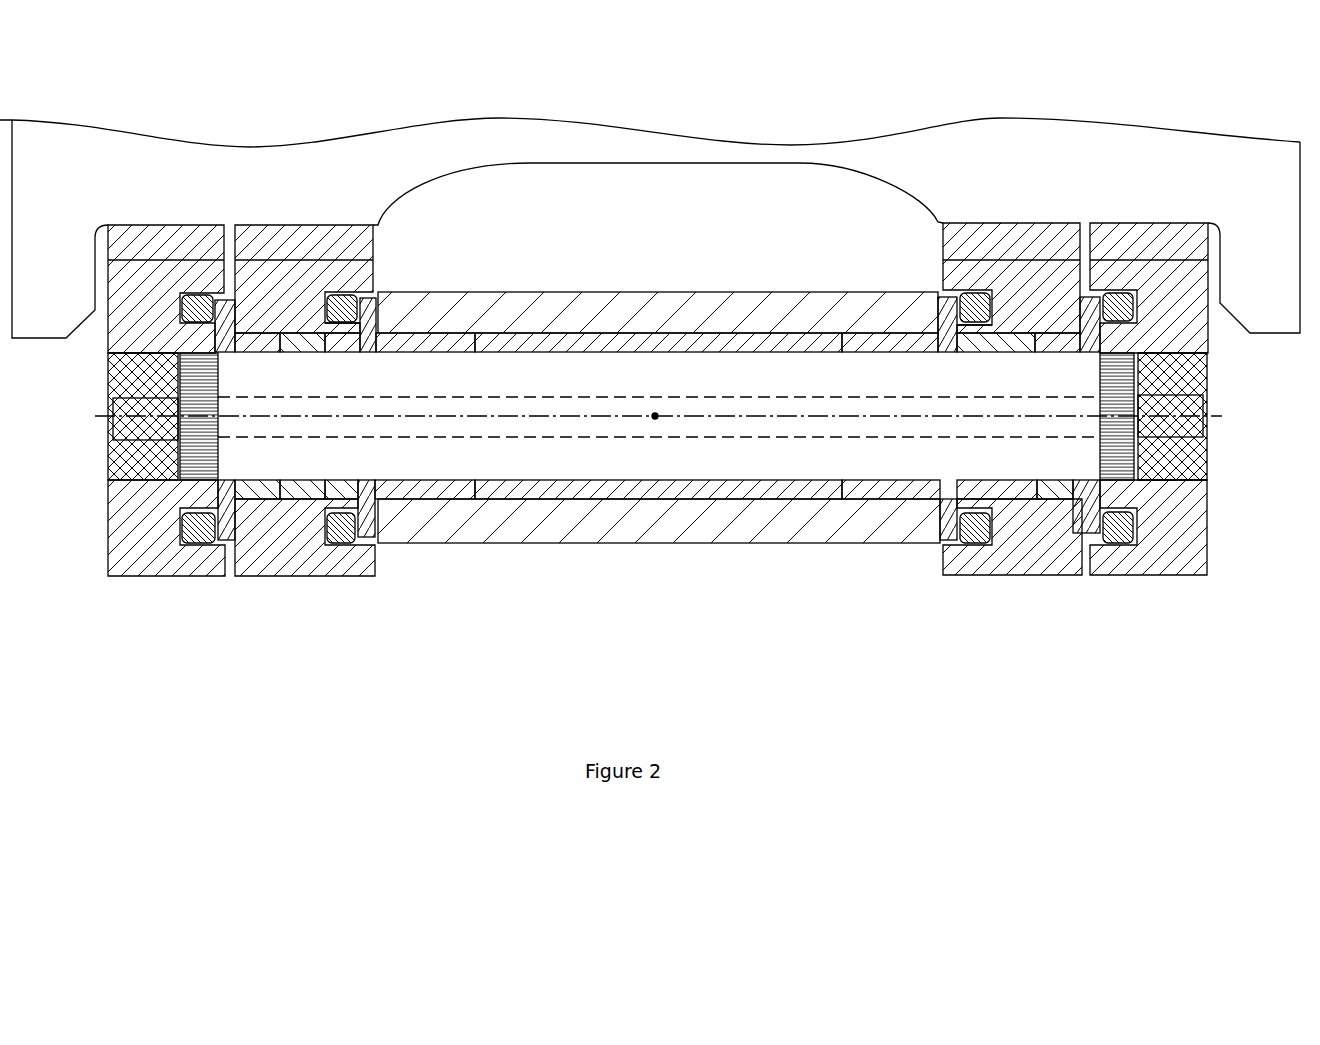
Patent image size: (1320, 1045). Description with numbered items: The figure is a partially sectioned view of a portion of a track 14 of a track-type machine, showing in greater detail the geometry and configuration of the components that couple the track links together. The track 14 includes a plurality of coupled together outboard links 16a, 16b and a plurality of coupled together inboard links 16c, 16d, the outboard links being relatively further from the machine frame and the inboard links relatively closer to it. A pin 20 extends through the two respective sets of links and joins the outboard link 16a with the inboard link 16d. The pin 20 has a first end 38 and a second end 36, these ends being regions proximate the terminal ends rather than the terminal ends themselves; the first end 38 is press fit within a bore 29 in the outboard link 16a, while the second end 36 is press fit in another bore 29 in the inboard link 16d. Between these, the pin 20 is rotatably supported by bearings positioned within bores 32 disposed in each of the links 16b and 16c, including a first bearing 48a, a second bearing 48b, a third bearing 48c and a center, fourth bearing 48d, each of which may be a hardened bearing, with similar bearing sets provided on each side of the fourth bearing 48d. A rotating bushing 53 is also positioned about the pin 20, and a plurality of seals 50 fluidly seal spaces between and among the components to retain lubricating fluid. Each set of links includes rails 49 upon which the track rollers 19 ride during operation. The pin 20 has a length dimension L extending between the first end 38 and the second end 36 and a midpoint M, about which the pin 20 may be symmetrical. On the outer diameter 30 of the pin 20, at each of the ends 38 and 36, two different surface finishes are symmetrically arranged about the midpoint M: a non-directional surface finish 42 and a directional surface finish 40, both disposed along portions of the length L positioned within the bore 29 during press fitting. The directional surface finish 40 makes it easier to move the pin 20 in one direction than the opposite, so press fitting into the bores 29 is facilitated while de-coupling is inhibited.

The track 14 is at (708, 578).
The outboard link 16a is at (155, 562).
The outboard link 16b is at (300, 562).
The inboard link 16c is at (1003, 555).
The inboard link 16d is at (1185, 555).
The track roller 19 is at (510, 131).
The pin 20 is at (1197, 473).
The bore 29 is at (112, 362).
The outer diameter 30 is at (1168, 488).
The bore 32 is at (252, 345).
The second end 36 is at (1213, 390).
The first end 38 is at (100, 388).
The directional surface finish 40 is at (107, 466).
The non-directional surface finish 42 is at (1108, 380).
The first bearing 48a is at (255, 353).
The second bearing 48b is at (968, 350).
The third bearing 48c is at (437, 352).
The fourth bearing 48d is at (633, 350).
The rail 49 is at (277, 250).
The seal 50 is at (180, 295).
The rotating bushing 53 is at (652, 297).
The length dimension L is at (527, 417).
The midpoint M is at (655, 419).